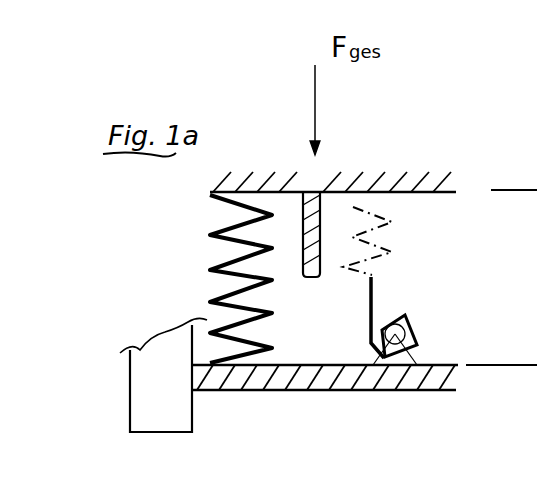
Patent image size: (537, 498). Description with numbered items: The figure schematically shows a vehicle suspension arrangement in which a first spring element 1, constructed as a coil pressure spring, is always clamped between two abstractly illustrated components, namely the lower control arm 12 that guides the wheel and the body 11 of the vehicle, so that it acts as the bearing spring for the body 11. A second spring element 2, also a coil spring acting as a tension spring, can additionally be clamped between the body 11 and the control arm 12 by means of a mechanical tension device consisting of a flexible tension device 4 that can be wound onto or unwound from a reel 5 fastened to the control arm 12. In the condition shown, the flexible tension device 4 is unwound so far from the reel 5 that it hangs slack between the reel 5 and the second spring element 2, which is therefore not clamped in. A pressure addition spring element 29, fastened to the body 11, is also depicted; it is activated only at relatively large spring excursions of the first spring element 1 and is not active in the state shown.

The first spring element 1 is at (210, 273).
The second spring element 2 is at (399, 246).
The flexible tension device 4 is at (367, 305).
The reel 5 is at (414, 334).
The body 11 is at (364, 192).
The lower control arm 12 is at (296, 378).
The pressure addition spring element 29 is at (302, 214).